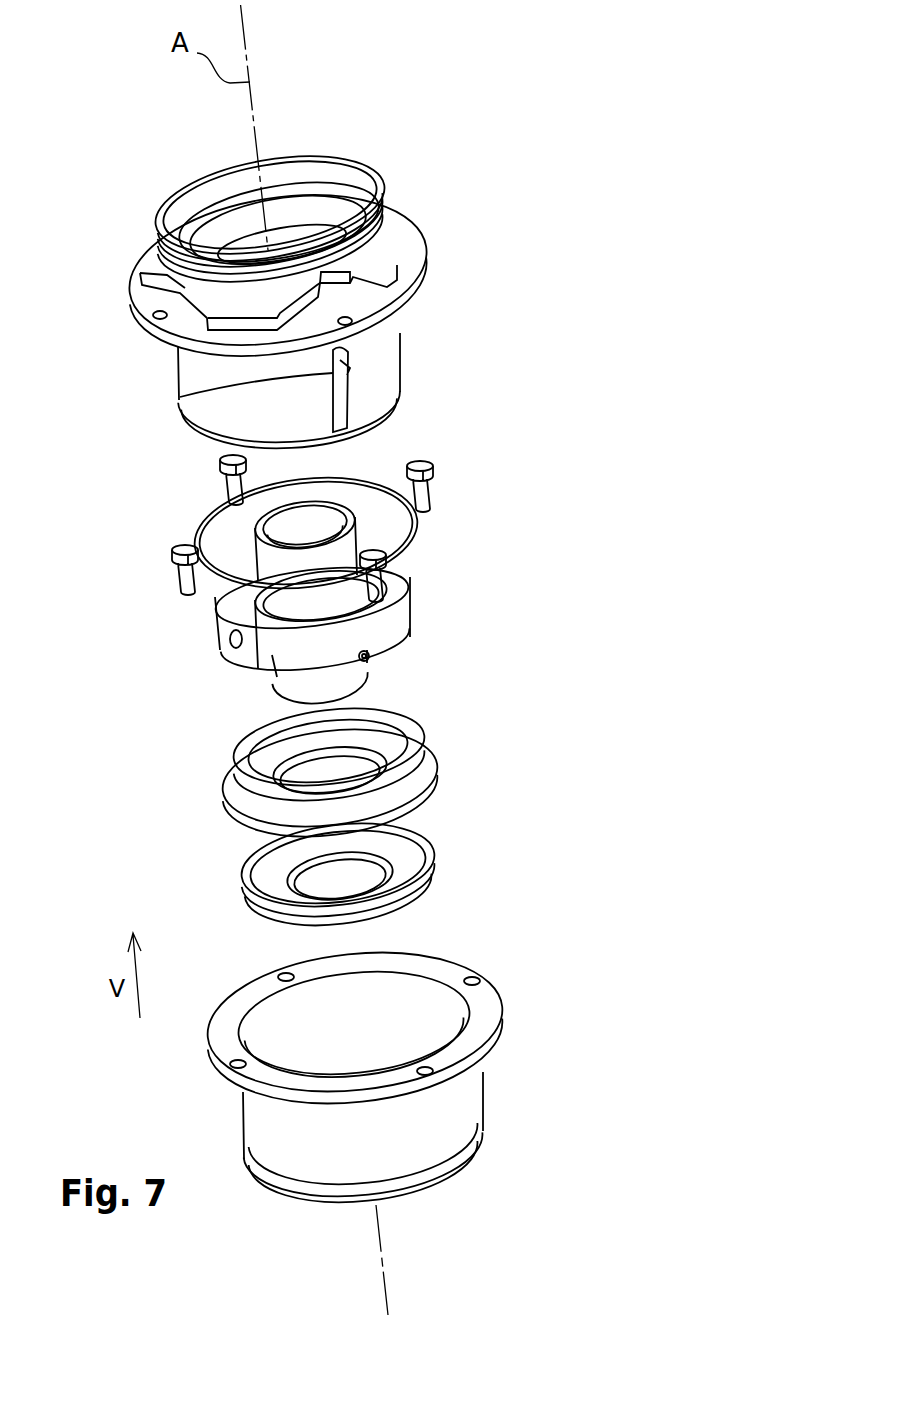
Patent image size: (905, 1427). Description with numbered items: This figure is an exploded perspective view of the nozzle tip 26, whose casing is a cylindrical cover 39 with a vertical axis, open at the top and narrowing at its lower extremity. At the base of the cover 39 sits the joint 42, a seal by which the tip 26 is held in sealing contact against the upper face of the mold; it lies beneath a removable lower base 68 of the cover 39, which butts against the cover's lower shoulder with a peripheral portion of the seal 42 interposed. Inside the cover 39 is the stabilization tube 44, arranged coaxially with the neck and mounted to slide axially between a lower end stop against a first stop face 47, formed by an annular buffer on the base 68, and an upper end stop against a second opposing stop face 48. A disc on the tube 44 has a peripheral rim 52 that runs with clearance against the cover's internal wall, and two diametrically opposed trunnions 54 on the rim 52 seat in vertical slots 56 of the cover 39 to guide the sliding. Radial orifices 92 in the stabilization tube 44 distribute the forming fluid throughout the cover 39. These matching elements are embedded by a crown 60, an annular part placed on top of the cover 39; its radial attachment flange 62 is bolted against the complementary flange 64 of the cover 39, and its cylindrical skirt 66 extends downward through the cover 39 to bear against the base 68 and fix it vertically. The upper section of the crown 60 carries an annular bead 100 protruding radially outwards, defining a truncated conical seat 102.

The nozzle tip 26 is at (112, 668).
The crown 60 is at (460, 280).
The annular bead 100 is at (380, 200).
The truncated conical seat 102 is at (412, 250).
The radial attachment flange 62 is at (407, 305).
The cylindrical skirt 66 is at (377, 388).
The second opposing stop face 48 is at (348, 373).
The vertical slot 56 is at (353, 414).
The stabilization tube 44 is at (428, 599).
The radial orifices 92 is at (232, 646).
The trunnion 54 is at (369, 655).
The peripheral rim 52 is at (272, 677).
The first stop face 47 is at (410, 730).
The removable lower base 68 is at (420, 778).
The joint 42 is at (417, 897).
The complementary flange 64 is at (487, 1022).
The cylindrical cover 39 is at (468, 1117).